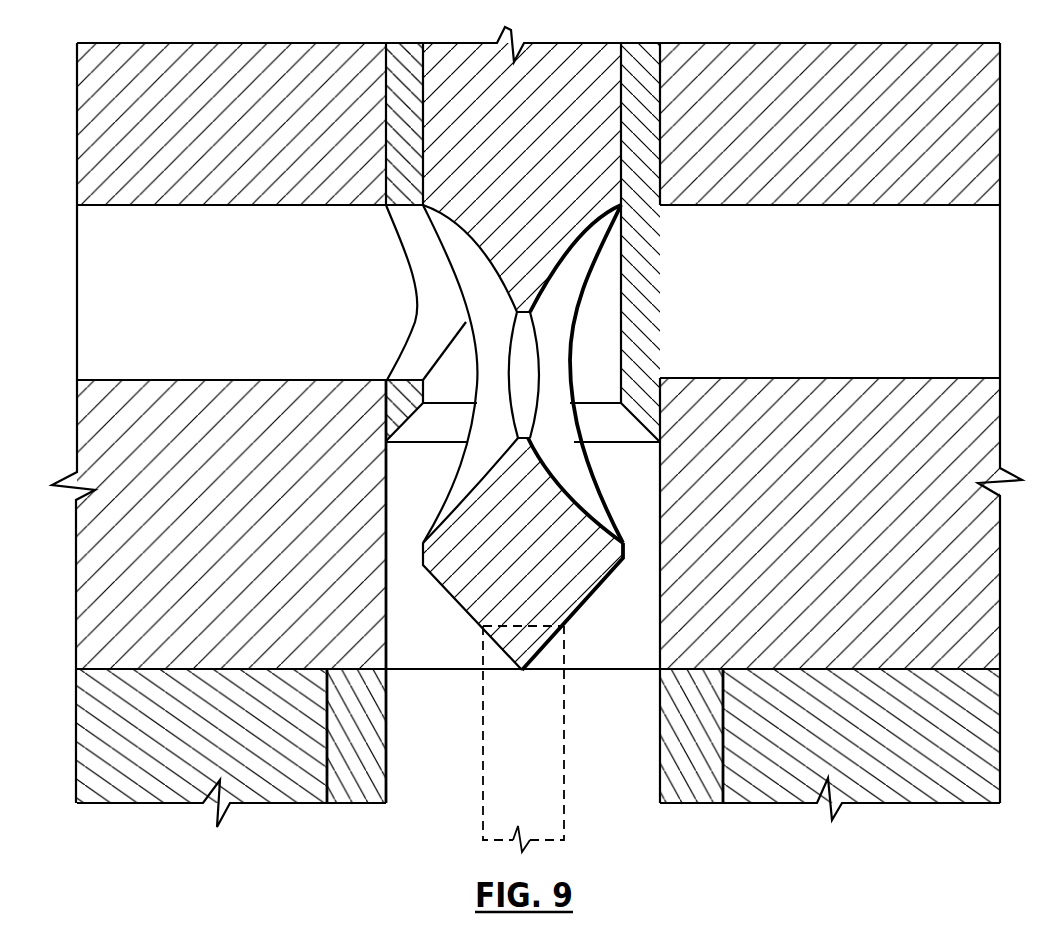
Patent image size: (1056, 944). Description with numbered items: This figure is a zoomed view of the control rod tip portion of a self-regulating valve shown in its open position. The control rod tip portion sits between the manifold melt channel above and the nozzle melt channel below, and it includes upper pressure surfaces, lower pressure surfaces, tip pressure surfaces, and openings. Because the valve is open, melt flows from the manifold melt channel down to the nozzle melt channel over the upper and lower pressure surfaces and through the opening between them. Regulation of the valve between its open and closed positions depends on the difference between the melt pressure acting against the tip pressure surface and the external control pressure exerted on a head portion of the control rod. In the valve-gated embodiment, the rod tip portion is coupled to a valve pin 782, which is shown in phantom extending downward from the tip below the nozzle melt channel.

The valve pin 782 is at (555, 787).